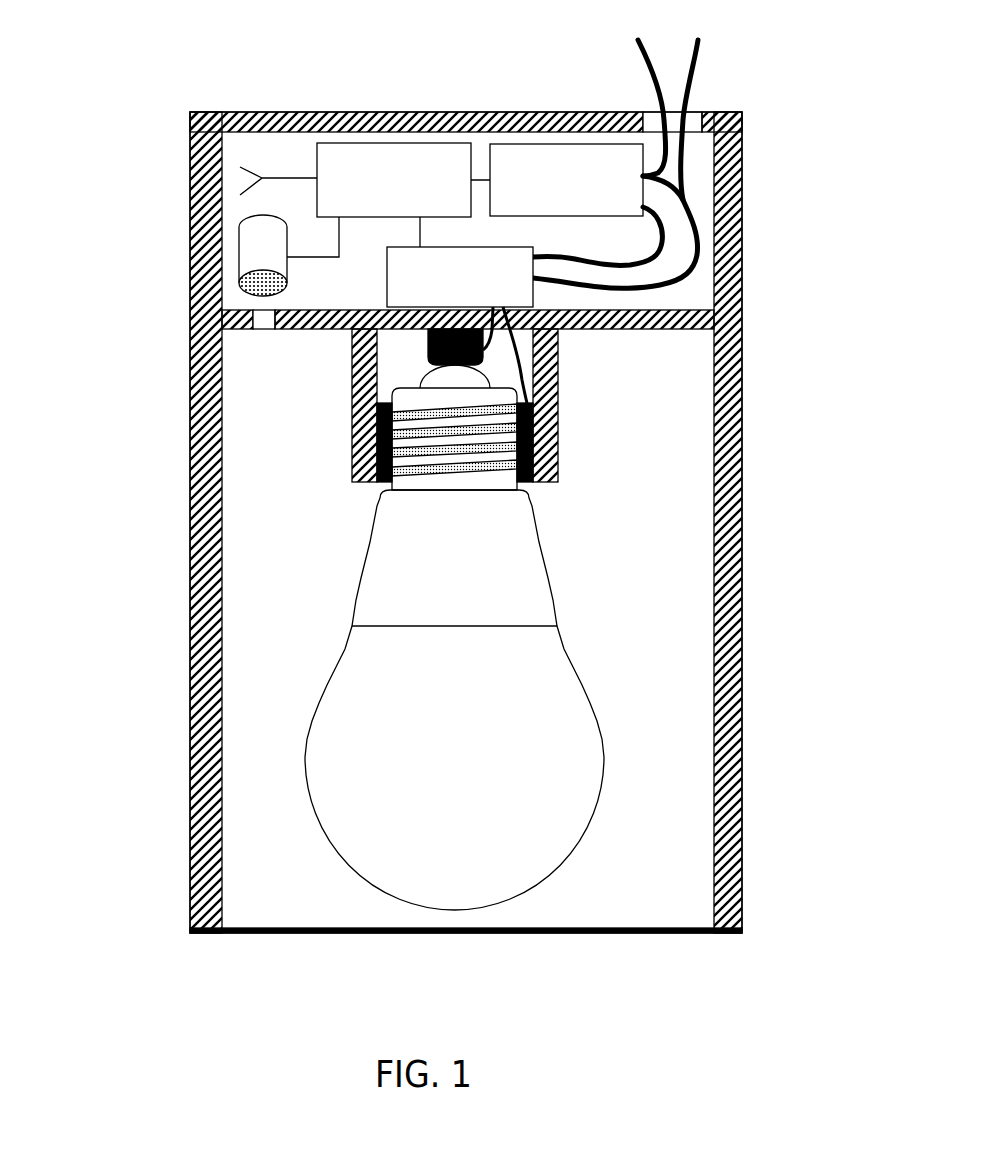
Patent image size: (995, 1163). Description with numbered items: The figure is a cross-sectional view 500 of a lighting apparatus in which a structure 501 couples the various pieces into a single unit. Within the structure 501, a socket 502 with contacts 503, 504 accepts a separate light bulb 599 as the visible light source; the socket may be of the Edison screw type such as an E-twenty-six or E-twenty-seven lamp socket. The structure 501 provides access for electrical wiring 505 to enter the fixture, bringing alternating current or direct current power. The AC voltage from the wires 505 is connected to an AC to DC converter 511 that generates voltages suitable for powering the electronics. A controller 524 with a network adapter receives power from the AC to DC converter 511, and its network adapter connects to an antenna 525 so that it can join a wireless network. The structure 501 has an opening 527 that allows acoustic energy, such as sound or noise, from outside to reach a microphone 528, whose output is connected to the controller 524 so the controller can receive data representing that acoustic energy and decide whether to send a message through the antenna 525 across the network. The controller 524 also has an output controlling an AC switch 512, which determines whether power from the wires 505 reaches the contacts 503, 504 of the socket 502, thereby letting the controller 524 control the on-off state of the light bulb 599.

The lighting apparatus 500 is at (146, 130).
The structure 501 is at (190, 703).
The socket 502 is at (327, 464).
The contact 503 is at (540, 488).
The contact 504 is at (483, 350).
The electrical wiring 505 is at (712, 90).
The AC to DC converter 511 is at (488, 150).
The AC switch 512 is at (535, 290).
The controller 524 is at (317, 152).
The antenna 525 is at (275, 177).
The opening 527 is at (249, 342).
The microphone 528 is at (238, 258).
The light bulb 599 is at (383, 890).